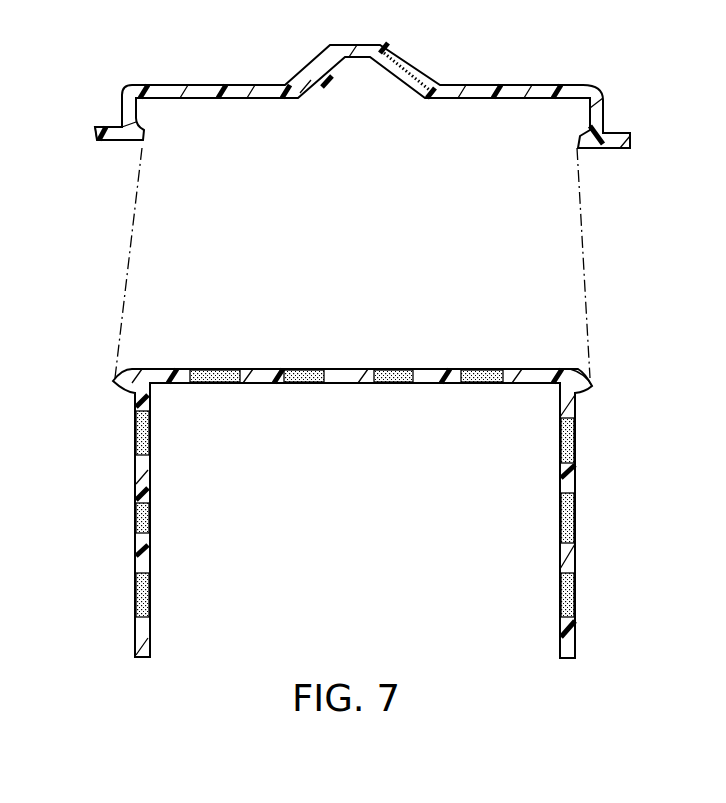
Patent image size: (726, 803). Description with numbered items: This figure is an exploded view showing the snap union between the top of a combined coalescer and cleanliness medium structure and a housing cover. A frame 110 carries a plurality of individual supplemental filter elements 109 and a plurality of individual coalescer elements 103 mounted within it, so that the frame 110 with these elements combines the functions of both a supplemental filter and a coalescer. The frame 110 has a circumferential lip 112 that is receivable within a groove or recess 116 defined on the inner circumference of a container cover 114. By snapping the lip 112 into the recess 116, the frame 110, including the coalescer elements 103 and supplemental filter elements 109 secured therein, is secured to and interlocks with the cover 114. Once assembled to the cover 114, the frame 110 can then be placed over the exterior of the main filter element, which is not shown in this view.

The container cover 114 is at (477, 93).
The groove or recess 116 is at (140, 120).
The supplemental filter elements 109 is at (303, 367).
The circumferential lip 112 is at (576, 390).
The coalescer elements 103 is at (576, 520).
The frame 110 is at (145, 548).